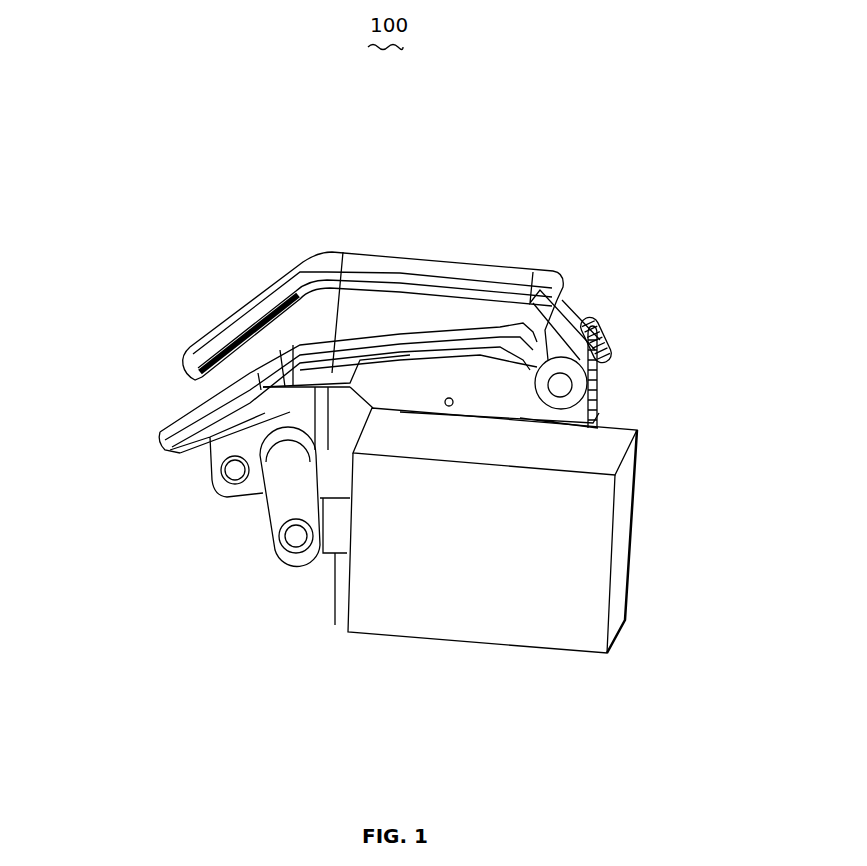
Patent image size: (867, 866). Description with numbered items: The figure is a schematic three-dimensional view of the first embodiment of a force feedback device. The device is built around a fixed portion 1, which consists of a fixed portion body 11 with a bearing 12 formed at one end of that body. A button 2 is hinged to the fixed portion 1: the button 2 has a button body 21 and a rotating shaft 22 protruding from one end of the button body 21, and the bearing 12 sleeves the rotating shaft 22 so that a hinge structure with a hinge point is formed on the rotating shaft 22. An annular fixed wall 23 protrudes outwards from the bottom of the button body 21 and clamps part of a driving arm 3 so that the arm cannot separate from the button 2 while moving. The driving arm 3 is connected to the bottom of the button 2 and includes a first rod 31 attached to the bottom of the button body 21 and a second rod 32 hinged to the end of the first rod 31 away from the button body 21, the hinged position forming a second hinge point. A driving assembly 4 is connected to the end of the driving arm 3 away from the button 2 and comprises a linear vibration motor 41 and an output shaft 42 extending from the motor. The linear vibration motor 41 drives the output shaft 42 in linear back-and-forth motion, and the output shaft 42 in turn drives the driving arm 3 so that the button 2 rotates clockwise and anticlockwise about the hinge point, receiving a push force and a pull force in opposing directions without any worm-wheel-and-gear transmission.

The fixed portion 1 is at (746, 322).
The fixed portion body 11 is at (560, 422).
The bearing 12 is at (596, 382).
The button 2 is at (578, 170).
The button body 21 is at (463, 313).
The rotating shaft 22 is at (585, 318).
The annular fixed wall 23 is at (357, 370).
The driving arm 3 is at (76, 440).
The first rod 31 is at (160, 434).
The second rod 32 is at (275, 492).
The driving assembly 4 is at (430, 760).
The linear vibration motor 41 is at (452, 613).
The output shaft 42 is at (335, 625).